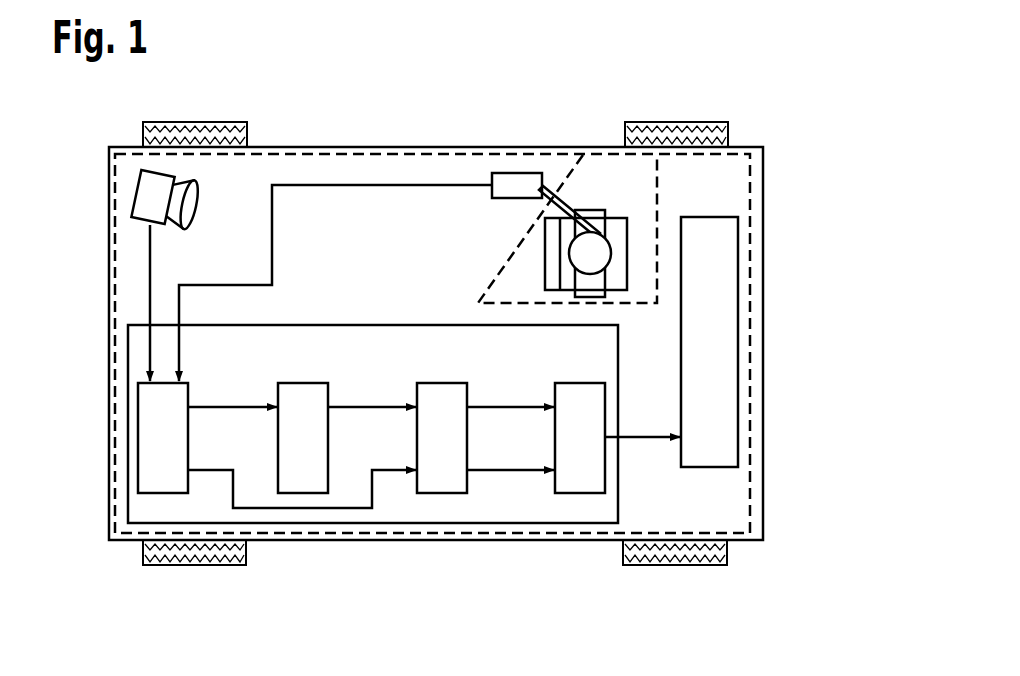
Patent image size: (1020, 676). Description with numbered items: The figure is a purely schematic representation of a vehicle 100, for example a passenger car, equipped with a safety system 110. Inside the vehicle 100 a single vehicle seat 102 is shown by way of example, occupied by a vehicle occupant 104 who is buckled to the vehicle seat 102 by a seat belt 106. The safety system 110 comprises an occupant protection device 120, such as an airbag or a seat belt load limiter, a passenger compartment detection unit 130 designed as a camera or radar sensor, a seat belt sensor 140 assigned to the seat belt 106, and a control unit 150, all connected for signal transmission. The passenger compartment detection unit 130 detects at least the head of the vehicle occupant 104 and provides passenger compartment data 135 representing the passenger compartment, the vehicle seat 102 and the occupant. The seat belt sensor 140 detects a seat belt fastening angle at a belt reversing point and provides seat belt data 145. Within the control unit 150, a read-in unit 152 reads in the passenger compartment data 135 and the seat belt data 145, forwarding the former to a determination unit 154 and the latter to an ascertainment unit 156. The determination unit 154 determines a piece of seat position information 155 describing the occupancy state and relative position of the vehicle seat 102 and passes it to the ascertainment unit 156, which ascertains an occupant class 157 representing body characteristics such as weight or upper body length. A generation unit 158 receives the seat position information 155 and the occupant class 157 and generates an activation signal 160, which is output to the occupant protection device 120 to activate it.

The vehicle 100 is at (105, 528).
The vehicle seat 102 is at (628, 225).
The vehicle occupant 104 is at (605, 210).
The seat belt 106 is at (570, 210).
The safety system 110 is at (342, 150).
The occupant protection device 120 is at (738, 295).
The passenger compartment detection unit 130 is at (140, 187).
The passenger compartment data 135 is at (150, 300).
The seat belt sensor 140 is at (500, 173).
The seat belt data 145 is at (415, 185).
The control unit 150 is at (128, 440).
The read-in unit 152 is at (190, 440).
The determination unit 154 is at (330, 440).
The seat position information 155 is at (243, 407).
The ascertainment unit 156 is at (469, 438).
The occupant class 157 is at (500, 472).
The generation unit 158 is at (580, 495).
The activation signal 160 is at (648, 440).